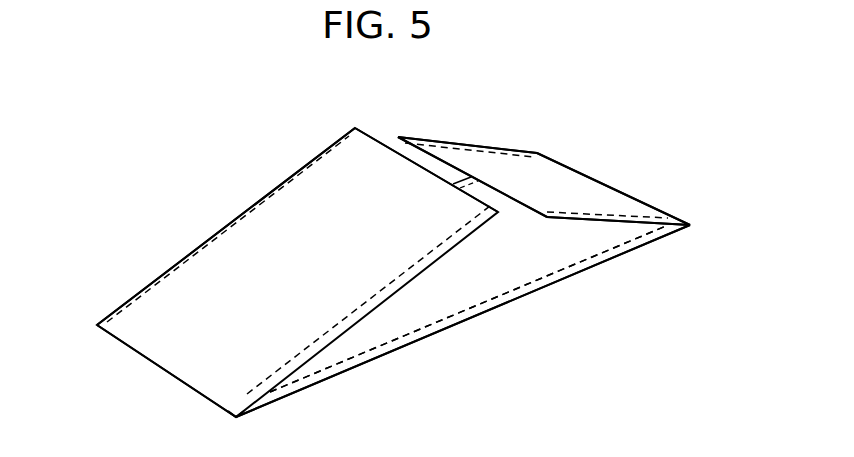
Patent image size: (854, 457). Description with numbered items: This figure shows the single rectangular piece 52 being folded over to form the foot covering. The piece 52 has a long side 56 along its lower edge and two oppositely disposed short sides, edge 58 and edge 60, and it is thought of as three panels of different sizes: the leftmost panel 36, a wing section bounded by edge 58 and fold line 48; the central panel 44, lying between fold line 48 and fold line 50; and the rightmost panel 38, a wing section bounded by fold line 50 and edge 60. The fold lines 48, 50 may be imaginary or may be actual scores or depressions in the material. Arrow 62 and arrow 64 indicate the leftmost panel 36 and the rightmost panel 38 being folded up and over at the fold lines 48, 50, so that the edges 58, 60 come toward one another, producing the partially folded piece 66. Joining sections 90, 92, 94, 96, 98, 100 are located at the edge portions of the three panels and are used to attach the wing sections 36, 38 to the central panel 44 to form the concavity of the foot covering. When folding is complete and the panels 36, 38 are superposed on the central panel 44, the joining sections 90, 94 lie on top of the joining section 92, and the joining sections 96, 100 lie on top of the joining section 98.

The leftmost panel 36 is at (313, 268).
The rightmost panel 38 is at (554, 193).
The central panel 44 is at (526, 260).
The fold line 48 is at (137, 353).
The fold line 50 is at (600, 180).
The rectangular piece 52 is at (55, 7).
The long side 56 is at (470, 319).
The short side 58 is at (375, 137).
The short side 60 is at (398, 137).
The arrow 62 is at (308, 135).
The arrow 64 is at (469, 65).
The partially folded piece 66 is at (133, 188).
The joining section 90 is at (227, 230).
The joining section 92 is at (450, 185).
The joining section 94 is at (500, 145).
The joining section 96 is at (245, 402).
The joining section 98 is at (540, 287).
The joining section 100 is at (667, 222).